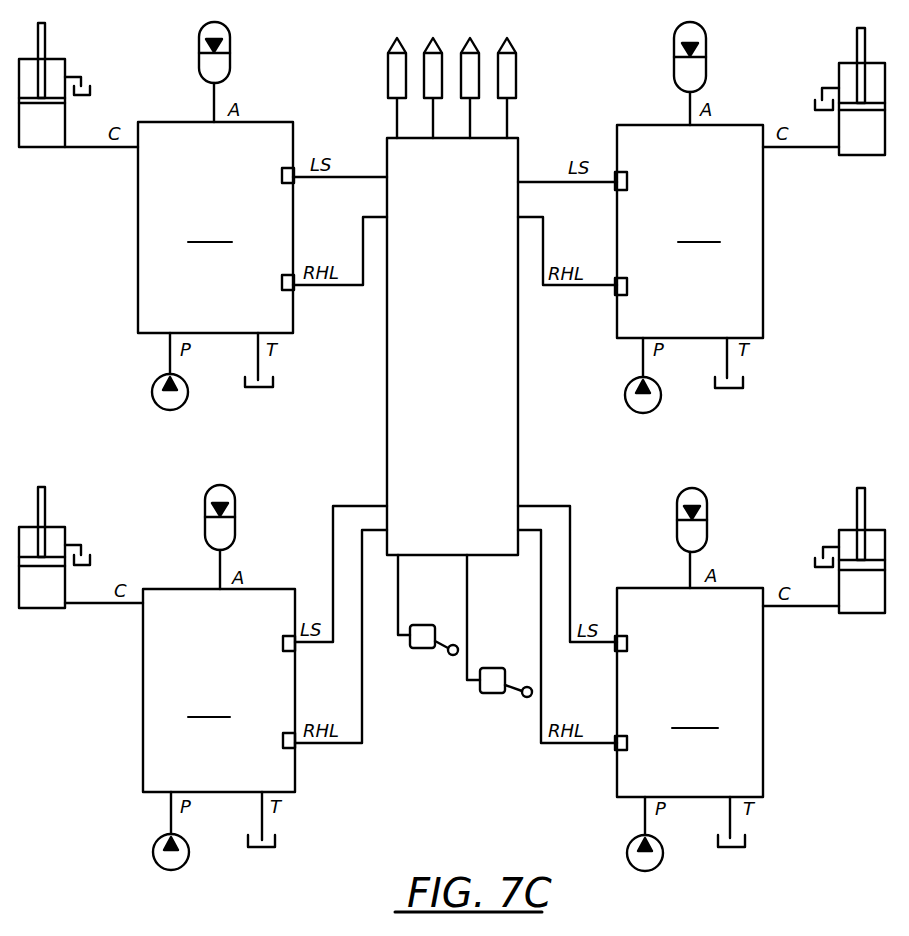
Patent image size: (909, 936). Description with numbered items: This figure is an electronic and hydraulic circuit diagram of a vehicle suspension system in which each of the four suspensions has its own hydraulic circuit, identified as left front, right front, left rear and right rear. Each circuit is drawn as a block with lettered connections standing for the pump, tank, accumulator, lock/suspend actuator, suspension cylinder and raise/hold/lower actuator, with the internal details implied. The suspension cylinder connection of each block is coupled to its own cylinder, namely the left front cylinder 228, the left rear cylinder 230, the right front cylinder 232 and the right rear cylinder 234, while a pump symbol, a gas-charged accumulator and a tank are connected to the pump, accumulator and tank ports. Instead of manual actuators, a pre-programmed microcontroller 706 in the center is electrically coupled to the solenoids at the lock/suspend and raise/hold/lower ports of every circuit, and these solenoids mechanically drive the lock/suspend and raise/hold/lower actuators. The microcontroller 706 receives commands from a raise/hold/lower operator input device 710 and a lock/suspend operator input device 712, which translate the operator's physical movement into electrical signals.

The left front suspension cylinder 228 is at (68, 70).
The left rear suspension cylinder 230 is at (68, 538).
The right front suspension cylinder 232 is at (836, 80).
The right rear suspension cylinder 234 is at (836, 540).
The microcontroller 706 is at (476, 315).
The raise/hold/lower operator input device 710 is at (425, 650).
The lock/suspend operator input device 712 is at (492, 693).